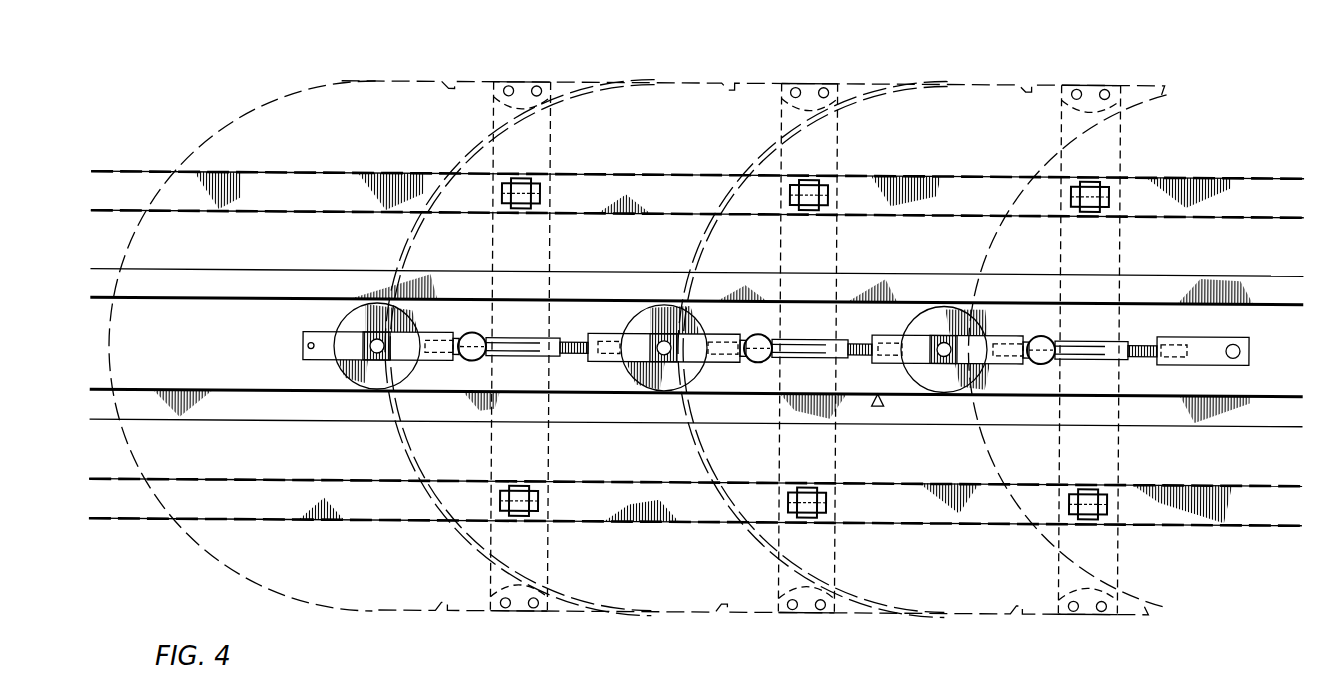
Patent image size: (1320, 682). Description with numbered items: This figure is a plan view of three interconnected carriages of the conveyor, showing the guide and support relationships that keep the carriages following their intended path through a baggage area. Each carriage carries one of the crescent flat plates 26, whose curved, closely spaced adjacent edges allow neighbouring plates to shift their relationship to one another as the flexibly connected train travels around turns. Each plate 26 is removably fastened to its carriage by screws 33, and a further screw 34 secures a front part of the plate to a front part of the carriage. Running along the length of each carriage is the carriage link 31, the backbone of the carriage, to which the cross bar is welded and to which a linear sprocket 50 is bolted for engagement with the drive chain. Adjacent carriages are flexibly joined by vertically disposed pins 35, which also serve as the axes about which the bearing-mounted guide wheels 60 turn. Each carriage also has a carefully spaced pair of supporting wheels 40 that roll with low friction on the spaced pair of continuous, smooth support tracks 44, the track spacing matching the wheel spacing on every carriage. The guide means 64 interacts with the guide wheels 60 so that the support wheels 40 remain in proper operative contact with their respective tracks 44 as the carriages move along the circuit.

The crescent flat plate 26 is at (345, 97).
The carriage link 31 is at (573, 343).
The screws 33 is at (826, 86).
The screw 34 is at (308, 349).
The pins 35 is at (662, 356).
The supporting wheels 40 is at (540, 195).
The support track 44 is at (927, 171).
The linear sprocket 50 is at (515, 336).
The guide wheel 60 is at (375, 307).
The guide means 64 is at (878, 405).